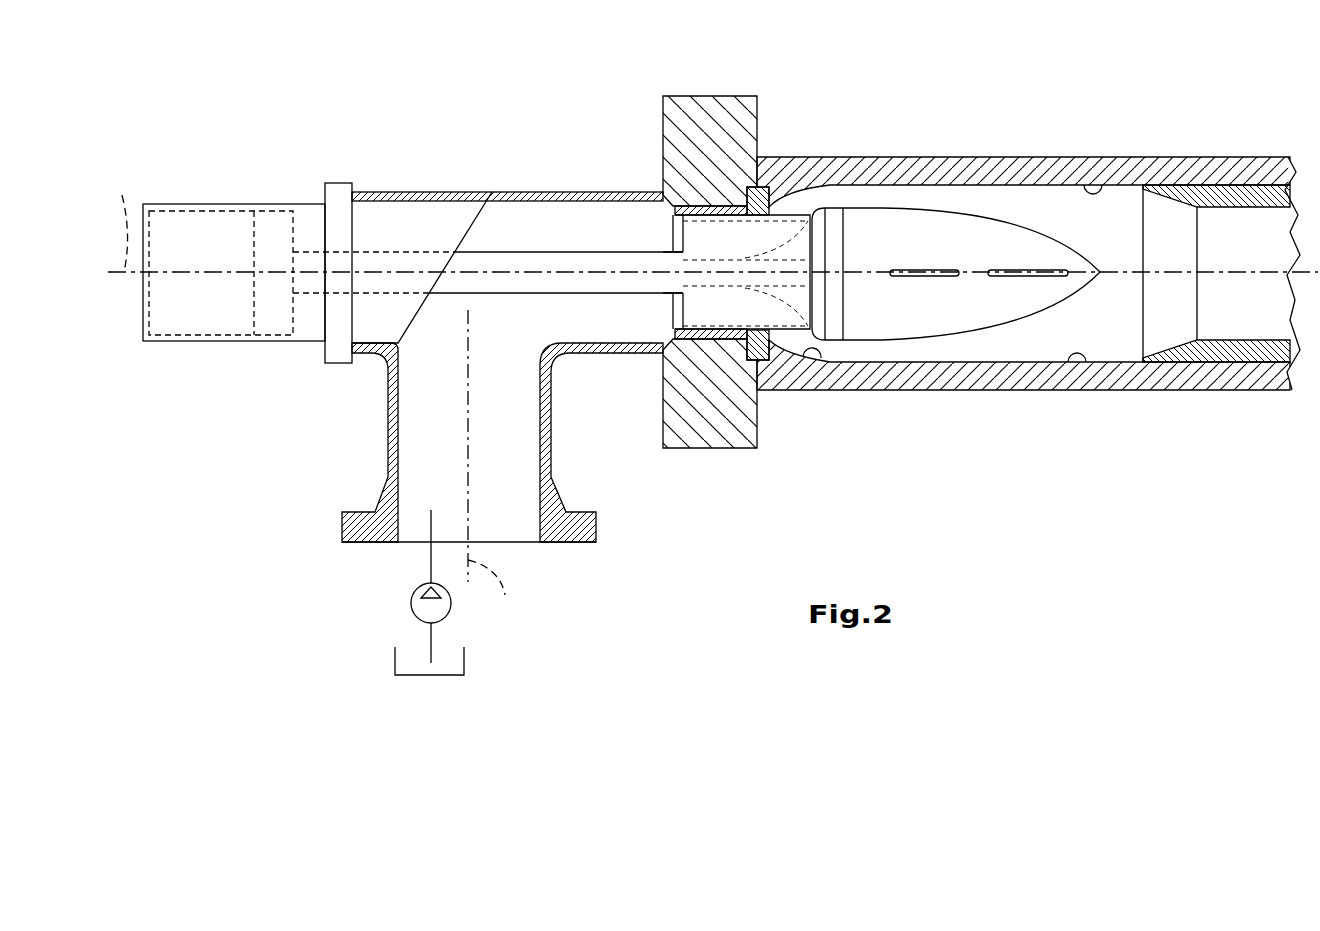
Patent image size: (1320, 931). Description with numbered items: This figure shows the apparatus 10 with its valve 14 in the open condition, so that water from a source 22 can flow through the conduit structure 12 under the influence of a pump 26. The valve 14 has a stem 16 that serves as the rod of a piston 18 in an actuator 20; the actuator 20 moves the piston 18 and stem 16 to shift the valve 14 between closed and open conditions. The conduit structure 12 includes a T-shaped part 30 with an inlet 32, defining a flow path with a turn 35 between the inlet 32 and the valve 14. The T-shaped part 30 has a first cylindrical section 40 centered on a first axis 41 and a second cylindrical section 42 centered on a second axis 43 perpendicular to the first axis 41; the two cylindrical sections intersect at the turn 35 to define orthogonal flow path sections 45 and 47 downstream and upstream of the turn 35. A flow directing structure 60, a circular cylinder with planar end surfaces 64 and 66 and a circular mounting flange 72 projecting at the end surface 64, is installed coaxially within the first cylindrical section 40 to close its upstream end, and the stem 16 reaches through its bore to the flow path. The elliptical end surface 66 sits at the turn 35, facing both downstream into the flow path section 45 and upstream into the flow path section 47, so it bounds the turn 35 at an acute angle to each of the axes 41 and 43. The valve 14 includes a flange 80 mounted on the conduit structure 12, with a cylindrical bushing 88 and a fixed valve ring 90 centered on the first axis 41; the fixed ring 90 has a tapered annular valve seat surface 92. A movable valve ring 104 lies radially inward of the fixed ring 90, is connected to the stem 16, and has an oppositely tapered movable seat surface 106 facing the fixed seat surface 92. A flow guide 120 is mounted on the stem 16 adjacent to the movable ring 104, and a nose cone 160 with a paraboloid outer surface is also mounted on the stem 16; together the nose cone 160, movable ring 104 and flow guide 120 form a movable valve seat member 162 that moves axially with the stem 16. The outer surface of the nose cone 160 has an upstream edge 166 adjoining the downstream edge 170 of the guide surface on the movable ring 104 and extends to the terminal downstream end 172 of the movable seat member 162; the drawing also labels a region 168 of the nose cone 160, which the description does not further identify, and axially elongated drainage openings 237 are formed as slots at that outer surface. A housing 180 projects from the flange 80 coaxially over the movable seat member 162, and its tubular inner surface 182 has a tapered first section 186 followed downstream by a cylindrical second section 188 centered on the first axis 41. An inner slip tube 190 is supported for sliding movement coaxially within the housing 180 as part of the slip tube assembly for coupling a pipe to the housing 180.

The apparatus 10 is at (270, 113).
The conduit structure 12 is at (529, 188).
The valve 14 is at (632, 110).
The stem 16 is at (490, 250).
The piston 18 is at (270, 243).
The actuator 20 is at (283, 204).
The source 22 is at (395, 664).
The pump 26 is at (410, 600).
The T-shaped part 30 is at (376, 450).
The inlet 32 is at (512, 538).
The turn 35 is at (451, 341).
The first cylindrical section 40 is at (575, 190).
The first axis 41 is at (127, 218).
The second cylindrical section 42 is at (552, 430).
The second axis 43 is at (495, 593).
The first section of the flow path 45 is at (609, 331).
The second section of the flow path 47 is at (447, 431).
The flow directing structure 60 is at (407, 228).
The end surface 64 is at (325, 355).
The elliptical end surface 66 is at (460, 240).
The mounting flange 72 is at (340, 183).
The flange 80 is at (722, 96).
The cylindrical bushing 88 is at (712, 340).
The valve ring 90 is at (758, 188).
The valve seat surface 92 is at (765, 218).
The movable valve ring 104 is at (815, 312).
The movable seat surface 106 is at (772, 212).
The flow guide 120 is at (683, 237).
The nose cone 160 is at (990, 245).
The movable valve seat member 162 is at (954, 207).
The upstream edge 166 is at (818, 250).
The tapered body surface 168 is at (1020, 305).
The downstream edge 170 is at (826, 300).
The terminal downstream end 172 is at (1103, 273).
The housing 180 is at (1050, 165).
The tubular inner surface 182 is at (1080, 353).
The first section 186 is at (820, 362).
The second section 188 is at (1105, 187).
The inner slip tube 190 is at (1223, 198).
The drainage openings 237 is at (923, 277).